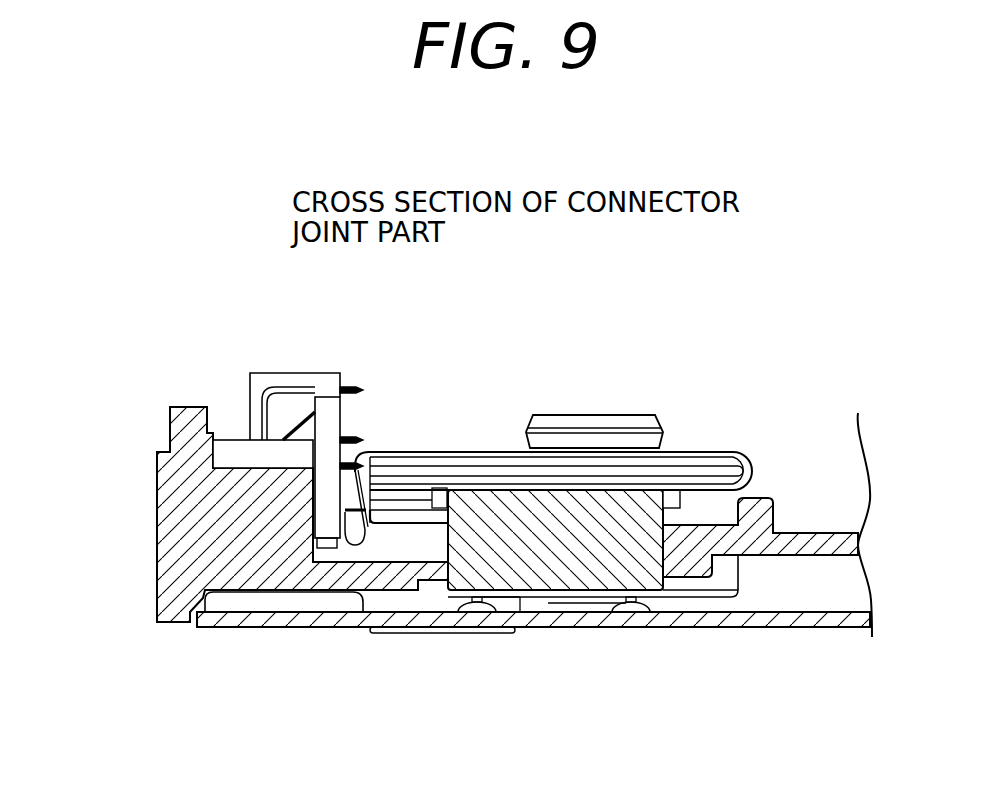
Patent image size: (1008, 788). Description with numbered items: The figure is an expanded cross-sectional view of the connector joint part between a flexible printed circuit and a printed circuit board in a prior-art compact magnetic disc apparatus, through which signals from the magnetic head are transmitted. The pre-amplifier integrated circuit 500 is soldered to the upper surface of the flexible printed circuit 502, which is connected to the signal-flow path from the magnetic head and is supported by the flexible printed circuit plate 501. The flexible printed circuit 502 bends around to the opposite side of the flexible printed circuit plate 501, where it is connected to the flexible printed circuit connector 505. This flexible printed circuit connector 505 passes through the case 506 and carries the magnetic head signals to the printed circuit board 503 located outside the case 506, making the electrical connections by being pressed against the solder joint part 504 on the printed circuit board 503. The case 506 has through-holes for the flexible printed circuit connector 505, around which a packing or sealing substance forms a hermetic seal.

The pre-amplifier integrated circuit 500 is at (605, 418).
The flexible printed circuit plate 501 is at (428, 455).
The flexible printed circuit 502 is at (725, 450).
The printed circuit board 503 is at (785, 622).
The solder joint part 504 is at (477, 612).
The flexible printed circuit connector 505 is at (458, 572).
The case 506 is at (158, 600).